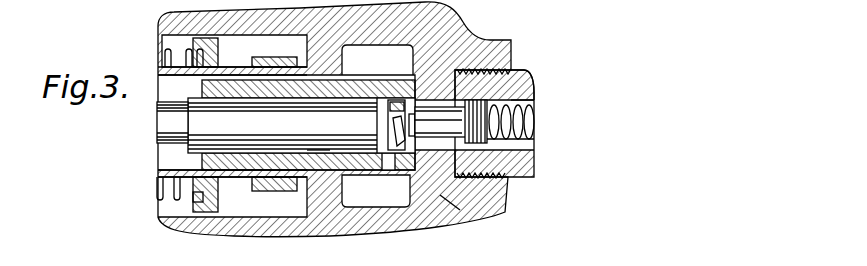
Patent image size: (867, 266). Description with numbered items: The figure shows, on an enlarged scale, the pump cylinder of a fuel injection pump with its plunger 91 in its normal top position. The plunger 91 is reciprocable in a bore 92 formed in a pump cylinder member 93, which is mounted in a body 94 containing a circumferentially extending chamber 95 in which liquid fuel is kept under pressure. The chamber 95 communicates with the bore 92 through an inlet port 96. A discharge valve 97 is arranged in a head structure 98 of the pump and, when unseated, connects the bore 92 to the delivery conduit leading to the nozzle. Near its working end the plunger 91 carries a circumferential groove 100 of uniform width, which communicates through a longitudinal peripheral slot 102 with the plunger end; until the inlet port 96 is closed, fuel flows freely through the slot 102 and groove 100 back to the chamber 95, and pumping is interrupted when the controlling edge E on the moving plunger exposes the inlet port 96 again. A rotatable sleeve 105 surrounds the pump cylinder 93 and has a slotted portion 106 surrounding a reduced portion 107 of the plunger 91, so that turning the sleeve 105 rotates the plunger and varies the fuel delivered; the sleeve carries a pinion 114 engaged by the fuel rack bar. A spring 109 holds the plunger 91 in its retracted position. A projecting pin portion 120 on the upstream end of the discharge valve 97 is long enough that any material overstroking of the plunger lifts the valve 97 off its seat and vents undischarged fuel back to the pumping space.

The body 94 is at (462, 38).
The longitudinal peripheral slot 102 is at (440, 100).
The head structure 98 is at (515, 80).
The discharge valve 97 is at (518, 107).
The projecting pin portion 120 is at (530, 128).
The inlet port 96 is at (393, 160).
The chamber 95 is at (402, 197).
The pump cylinder member 93 is at (350, 86).
The groove 100 is at (381, 105).
The plunger 91 is at (337, 133).
The bore 92 is at (307, 150).
The reduced portion 107 is at (173, 123).
The sleeve portion 106 is at (163, 178).
The spring 109 is at (177, 198).
The rotatable sleeve 105 is at (240, 177).
The pinion 114 is at (276, 190).
The controlling edge E is at (380, 152).